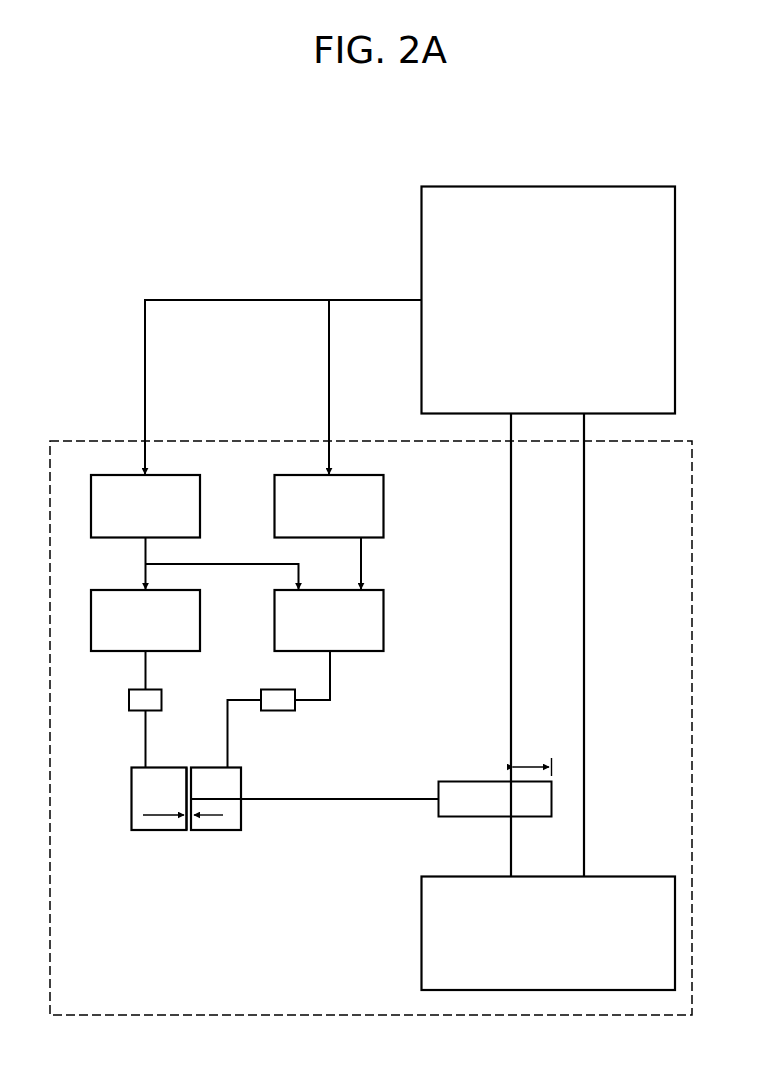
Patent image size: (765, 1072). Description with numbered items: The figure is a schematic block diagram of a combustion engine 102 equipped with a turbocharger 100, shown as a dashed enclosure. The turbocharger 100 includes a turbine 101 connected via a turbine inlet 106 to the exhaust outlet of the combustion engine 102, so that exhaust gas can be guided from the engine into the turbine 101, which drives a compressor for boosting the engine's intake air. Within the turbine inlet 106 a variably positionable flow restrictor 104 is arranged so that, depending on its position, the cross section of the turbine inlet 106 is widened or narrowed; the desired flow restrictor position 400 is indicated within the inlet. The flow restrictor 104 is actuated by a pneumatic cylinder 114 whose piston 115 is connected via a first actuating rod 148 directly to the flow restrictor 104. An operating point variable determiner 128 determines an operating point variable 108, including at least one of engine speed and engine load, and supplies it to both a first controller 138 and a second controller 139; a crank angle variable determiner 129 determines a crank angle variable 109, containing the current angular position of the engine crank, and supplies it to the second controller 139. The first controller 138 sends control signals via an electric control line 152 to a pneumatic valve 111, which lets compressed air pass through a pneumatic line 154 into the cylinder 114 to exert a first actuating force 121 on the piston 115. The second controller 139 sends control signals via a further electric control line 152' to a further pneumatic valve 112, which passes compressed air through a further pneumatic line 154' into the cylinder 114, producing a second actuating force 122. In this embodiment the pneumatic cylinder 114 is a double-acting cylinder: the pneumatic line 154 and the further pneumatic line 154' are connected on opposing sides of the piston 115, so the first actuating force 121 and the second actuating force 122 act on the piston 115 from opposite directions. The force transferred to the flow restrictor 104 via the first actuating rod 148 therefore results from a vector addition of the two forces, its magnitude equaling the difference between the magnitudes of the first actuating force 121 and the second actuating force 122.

The turbocharger 100 is at (108, 441).
The turbine 101 is at (421, 932).
The combustion engine 102 is at (421, 237).
The flow restrictor 104 is at (475, 818).
The turbine inlet 106 is at (585, 845).
The operating point variable 108 is at (221, 566).
The crank angle variable 109 is at (362, 556).
The pneumatic valve 111 is at (162, 699).
The further pneumatic valve 112 is at (294, 711).
The pneumatic cylinder 114 is at (165, 831).
The piston 115 is at (188, 781).
The first actuating force 121 is at (155, 819).
The second actuating force 122 is at (223, 818).
The operating point variable determiner 128 is at (201, 506).
The crank angle variable determiner 129 is at (385, 506).
The first controller 138 is at (201, 631).
The second controller 139 is at (385, 620).
The first actuating rod 148 is at (340, 800).
The electric control line 152 is at (115, 670).
The further electric control line 152' is at (346, 675).
The pneumatic line 154 is at (115, 739).
The further pneumatic line 154' is at (261, 734).
The flow restrictor position 400 is at (531, 764).